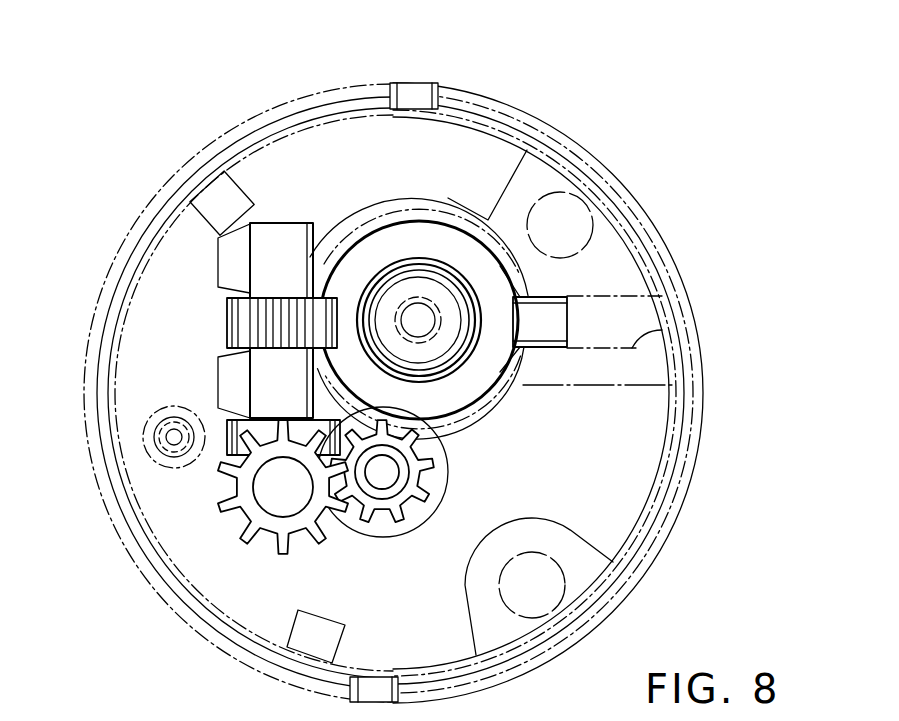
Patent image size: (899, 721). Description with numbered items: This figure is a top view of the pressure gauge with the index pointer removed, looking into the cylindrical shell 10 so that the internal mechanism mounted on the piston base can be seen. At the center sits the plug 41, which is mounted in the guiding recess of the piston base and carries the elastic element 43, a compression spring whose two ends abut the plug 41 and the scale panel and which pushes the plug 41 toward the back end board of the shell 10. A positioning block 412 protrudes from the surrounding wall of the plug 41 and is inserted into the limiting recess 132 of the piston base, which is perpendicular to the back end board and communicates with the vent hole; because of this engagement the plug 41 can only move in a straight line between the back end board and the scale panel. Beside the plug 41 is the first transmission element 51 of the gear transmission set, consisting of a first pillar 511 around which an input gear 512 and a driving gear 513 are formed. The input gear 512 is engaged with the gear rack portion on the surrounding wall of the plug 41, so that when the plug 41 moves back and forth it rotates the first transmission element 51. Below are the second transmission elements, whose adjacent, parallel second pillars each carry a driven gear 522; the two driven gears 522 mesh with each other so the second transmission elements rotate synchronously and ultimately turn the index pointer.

The shell 10 is at (663, 257).
The limiting recess 132 is at (665, 330).
The plug 41 is at (422, 238).
The positioning block 412 is at (528, 328).
The elastic element 43 is at (457, 283).
The first transmission element 51 is at (290, 222).
The first pillar 511 is at (262, 254).
The input gear 512 is at (226, 317).
The driving gear 513 is at (233, 428).
The driven gear 522 is at (245, 518).